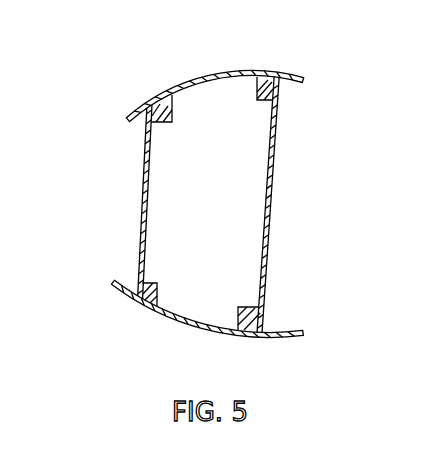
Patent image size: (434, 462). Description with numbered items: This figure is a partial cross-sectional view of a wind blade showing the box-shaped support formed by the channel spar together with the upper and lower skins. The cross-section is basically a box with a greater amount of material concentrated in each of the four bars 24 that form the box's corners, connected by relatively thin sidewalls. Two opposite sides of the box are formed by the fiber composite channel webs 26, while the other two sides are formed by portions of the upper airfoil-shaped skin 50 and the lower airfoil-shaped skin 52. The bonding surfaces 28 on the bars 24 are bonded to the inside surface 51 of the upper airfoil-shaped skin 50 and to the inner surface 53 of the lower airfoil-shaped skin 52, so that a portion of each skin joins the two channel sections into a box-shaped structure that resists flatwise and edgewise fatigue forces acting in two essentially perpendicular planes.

The bar 24 is at (160, 117).
The fiber composite channel web 26 is at (145, 199).
The bonding surface 28 is at (157, 105).
The upper airfoil-shaped skin 50 is at (216, 74).
The inside surface of the upper airfoil-shaped skin 51 is at (203, 90).
The lower airfoil-shaped skin 52 is at (173, 325).
The inner surface of the lower airfoil-shaped skin 53 is at (208, 323).